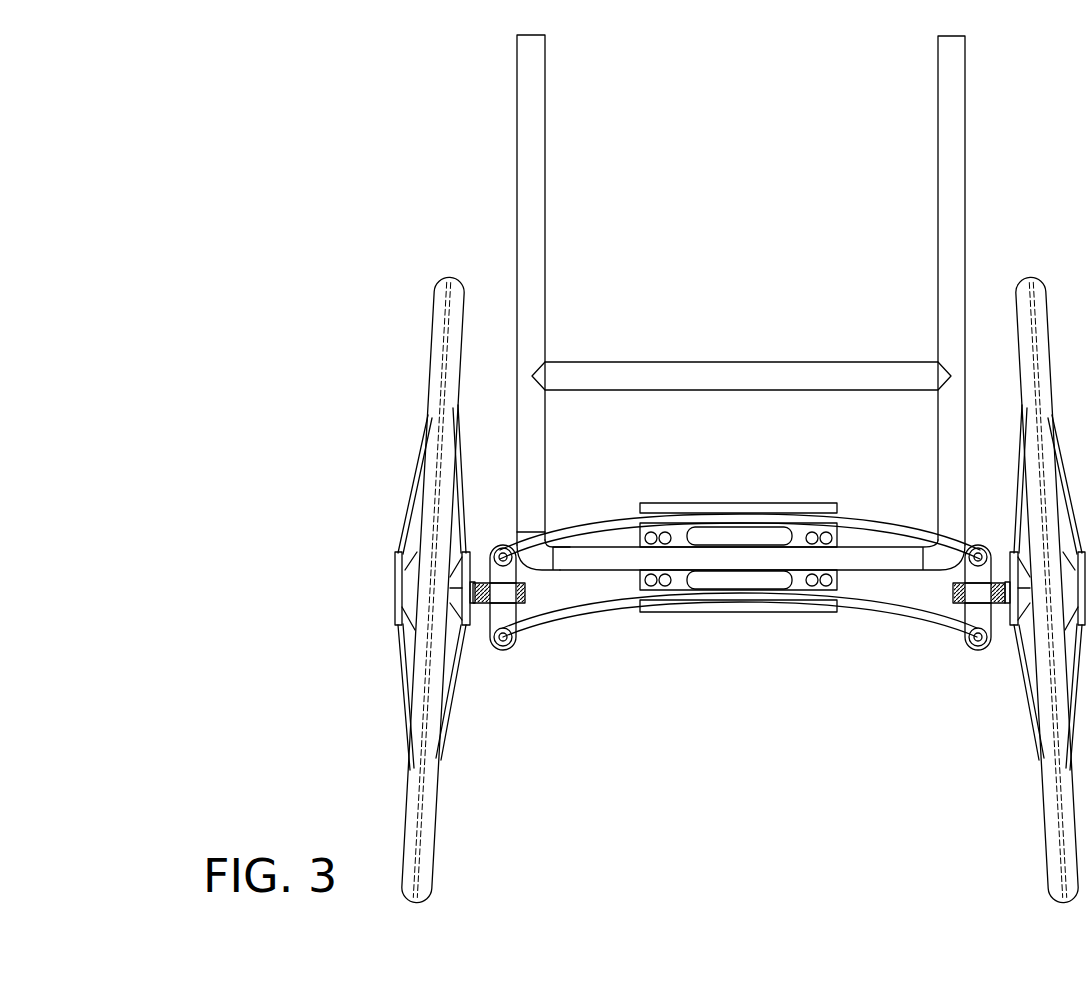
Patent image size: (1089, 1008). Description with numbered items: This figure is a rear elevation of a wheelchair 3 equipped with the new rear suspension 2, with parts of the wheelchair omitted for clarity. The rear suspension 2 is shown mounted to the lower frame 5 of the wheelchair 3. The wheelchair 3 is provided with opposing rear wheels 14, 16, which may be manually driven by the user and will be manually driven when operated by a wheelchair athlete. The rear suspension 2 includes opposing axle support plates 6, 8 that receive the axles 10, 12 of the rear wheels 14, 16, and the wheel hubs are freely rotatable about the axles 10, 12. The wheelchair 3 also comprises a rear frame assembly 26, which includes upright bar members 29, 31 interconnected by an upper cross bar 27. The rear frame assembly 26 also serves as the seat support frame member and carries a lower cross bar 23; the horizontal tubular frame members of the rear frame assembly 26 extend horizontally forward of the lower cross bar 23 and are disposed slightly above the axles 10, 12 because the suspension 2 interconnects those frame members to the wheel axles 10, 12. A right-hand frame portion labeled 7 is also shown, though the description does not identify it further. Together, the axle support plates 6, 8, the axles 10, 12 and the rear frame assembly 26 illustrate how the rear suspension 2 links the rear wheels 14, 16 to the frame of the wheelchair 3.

The rear suspension 2 is at (738, 563).
The wheelchair 3 is at (432, 590).
The lower frame 5 is at (880, 572).
The axle support plate 6 is at (980, 612).
The right frame tube 7 is at (937, 445).
The axle support plate 8 is at (505, 612).
The axle 10 is at (955, 595).
The axle 12 is at (525, 593).
The rear wheel 14 is at (1048, 790).
The rear wheel 16 is at (427, 845).
The lower cross bar 23 is at (750, 560).
The rear frame assembly 26 is at (540, 458).
The upper cross bar 27 is at (745, 360).
The upright bar member 29 is at (517, 157).
The upright bar member 31 is at (965, 155).